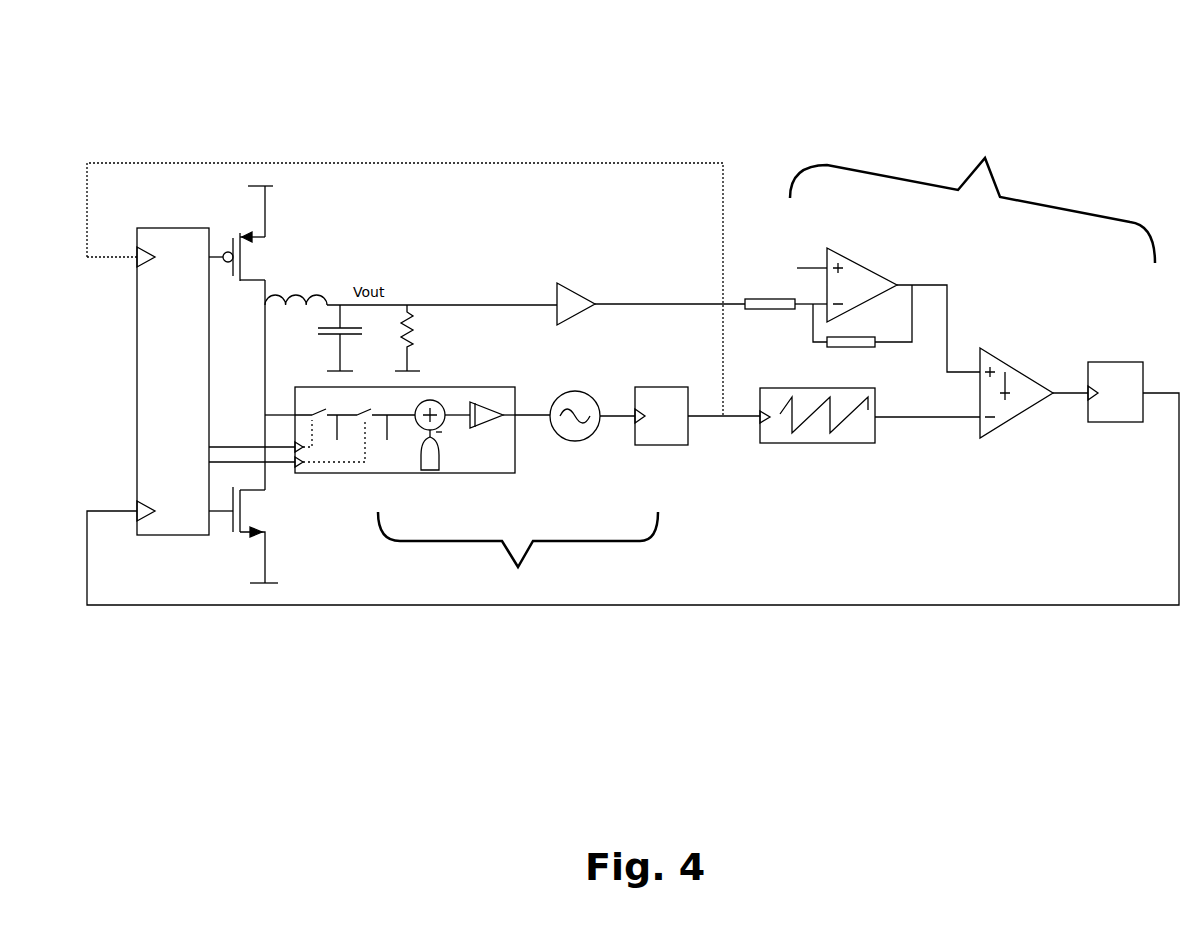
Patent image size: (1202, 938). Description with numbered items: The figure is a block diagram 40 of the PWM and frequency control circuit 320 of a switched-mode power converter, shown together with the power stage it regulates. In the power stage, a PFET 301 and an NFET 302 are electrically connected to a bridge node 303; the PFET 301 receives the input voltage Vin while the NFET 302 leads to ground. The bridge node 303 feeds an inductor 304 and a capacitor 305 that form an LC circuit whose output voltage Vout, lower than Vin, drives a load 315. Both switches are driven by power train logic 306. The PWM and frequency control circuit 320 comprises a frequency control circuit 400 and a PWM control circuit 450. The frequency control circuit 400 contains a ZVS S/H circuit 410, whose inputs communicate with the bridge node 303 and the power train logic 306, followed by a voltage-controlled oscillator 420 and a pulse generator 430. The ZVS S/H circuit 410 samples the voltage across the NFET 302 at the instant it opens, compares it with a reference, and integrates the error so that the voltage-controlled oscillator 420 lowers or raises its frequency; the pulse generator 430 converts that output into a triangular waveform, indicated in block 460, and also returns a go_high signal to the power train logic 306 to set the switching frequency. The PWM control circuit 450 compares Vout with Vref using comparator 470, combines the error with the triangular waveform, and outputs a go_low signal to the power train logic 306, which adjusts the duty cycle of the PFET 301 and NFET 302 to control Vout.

The block diagram 40 is at (134, 61).
The PWM and frequency control circuit 320 is at (969, 80).
The PFET 301 is at (279, 256).
The NFET 302 is at (269, 513).
The bridge node 303 is at (260, 335).
The inductor 304 is at (296, 314).
The capacitor 305 is at (371, 337).
The power train logic 306 is at (186, 484).
The load 315 is at (424, 328).
The frequency control circuit 400 is at (484, 478).
The ZVS S/H circuit 410 is at (490, 478).
The voltage-controlled oscillator 420 is at (575, 452).
The pulse generator 430 is at (714, 451).
The PWM control circuit 450 is at (950, 319).
The block 460 is at (800, 449).
The comparator 470 is at (861, 249).